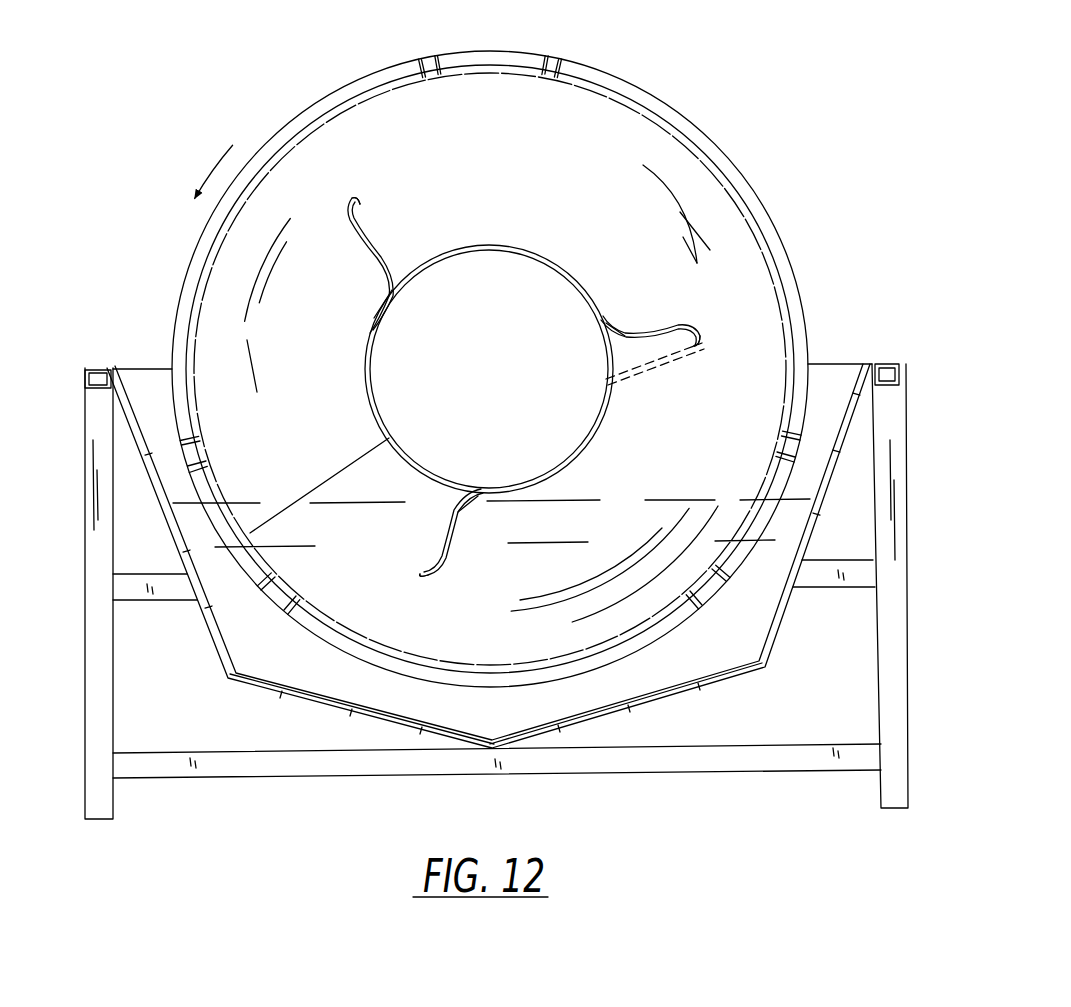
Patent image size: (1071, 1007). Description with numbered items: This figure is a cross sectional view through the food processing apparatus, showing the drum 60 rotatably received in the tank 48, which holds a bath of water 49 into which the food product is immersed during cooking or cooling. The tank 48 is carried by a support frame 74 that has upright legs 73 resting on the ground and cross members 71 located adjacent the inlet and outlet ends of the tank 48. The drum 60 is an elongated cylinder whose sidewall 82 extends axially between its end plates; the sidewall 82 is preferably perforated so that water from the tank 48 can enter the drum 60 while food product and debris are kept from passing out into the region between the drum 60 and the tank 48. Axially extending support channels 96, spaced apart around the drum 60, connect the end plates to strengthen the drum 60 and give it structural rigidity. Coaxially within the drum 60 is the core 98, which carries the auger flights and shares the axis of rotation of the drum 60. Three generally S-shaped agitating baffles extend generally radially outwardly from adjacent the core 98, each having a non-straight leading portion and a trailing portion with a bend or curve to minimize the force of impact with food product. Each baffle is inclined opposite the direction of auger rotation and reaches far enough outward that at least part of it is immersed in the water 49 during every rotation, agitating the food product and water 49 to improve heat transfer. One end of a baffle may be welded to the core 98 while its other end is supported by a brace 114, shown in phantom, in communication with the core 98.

The sidewall 82 is at (672, 128).
The support channels 96 is at (548, 57).
The core 98 is at (525, 210).
The brace 114 is at (643, 372).
The water 49 is at (520, 586).
The drum 60 is at (597, 688).
The tank 48 is at (686, 716).
The support frame 74 is at (888, 356).
The upright posts 73 is at (100, 822).
The cross members 71 is at (163, 603).